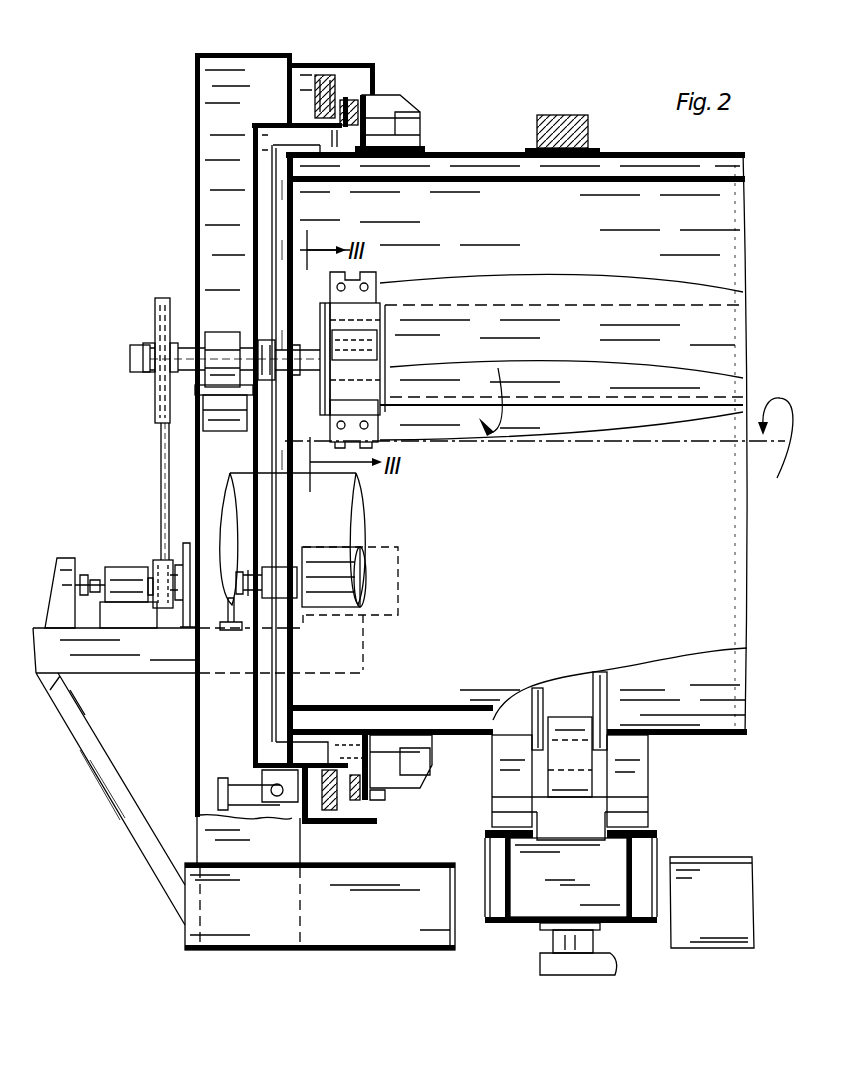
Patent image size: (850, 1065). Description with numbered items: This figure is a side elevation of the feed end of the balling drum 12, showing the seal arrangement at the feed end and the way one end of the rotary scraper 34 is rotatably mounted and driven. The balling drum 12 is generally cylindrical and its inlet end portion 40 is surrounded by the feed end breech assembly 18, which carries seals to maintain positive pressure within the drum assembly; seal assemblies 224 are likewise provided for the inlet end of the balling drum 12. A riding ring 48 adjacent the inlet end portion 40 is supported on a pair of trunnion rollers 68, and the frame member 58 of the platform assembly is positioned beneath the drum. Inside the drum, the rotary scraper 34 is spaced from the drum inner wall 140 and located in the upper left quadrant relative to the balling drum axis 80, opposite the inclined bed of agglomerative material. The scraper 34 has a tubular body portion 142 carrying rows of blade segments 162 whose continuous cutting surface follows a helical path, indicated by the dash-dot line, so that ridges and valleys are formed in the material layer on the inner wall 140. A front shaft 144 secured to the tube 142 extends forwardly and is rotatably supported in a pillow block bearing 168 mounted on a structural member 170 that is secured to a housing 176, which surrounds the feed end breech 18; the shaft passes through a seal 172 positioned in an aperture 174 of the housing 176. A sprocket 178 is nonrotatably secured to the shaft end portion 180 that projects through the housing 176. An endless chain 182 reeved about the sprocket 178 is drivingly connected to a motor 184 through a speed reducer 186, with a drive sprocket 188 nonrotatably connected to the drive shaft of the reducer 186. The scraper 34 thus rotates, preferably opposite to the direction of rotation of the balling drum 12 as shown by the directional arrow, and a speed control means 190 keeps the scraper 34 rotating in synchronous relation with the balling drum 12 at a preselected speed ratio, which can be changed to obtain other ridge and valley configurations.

The balling drum 12 is at (629, 148).
The feed end breech assembly 18 is at (328, 57).
The rotary scraper 34 is at (599, 277).
The inlet end portion 40 is at (288, 220).
The riding ring 48 is at (558, 120).
The frame member 58 is at (446, 880).
The trunnion rollers 68 is at (585, 725).
The balling drum axis 80 is at (688, 446).
The drum inner wall 140 is at (552, 221).
The tubular body portion 142 is at (725, 330).
The front shaft 144 is at (306, 385).
The blade segments 162 is at (378, 288).
The pillow block bearing 168 is at (216, 338).
The structural member 170 is at (215, 432).
The seal 172 is at (268, 340).
The aperture 174 is at (255, 398).
The housing 176 is at (196, 252).
The sprocket 178 is at (155, 319).
The shaft end portion 180 is at (130, 358).
The endless chain 182 is at (161, 478).
The motor 184 is at (394, 587).
The speed reducer 186 is at (190, 546).
The drive sprocket 188 is at (157, 562).
The speed control means 190 is at (101, 566).
The seal assemblies 224 is at (410, 97).